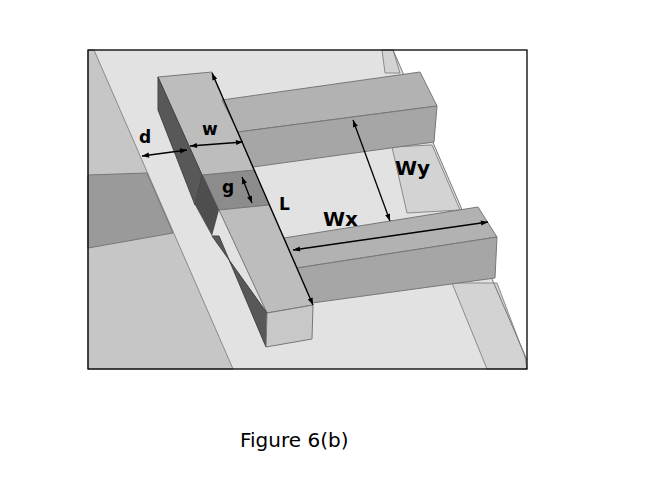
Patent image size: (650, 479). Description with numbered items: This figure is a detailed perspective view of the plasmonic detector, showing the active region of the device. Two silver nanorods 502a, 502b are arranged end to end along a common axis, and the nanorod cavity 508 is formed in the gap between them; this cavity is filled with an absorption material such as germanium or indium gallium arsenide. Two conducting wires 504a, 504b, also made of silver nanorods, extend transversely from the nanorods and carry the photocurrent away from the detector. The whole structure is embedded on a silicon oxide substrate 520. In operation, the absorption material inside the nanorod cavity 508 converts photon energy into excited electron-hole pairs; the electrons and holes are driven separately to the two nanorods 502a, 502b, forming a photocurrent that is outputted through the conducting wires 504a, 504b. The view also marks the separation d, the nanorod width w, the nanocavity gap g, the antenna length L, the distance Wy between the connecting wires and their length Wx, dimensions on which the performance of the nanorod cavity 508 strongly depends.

The Ag nanorod 502a is at (192, 83).
The Ag nanorod 502b is at (262, 287).
The conducting wire 504a is at (398, 82).
The conducting wire 504b is at (448, 270).
The nanorod cavity 508 is at (211, 207).
The SiO2 substrate 520 is at (397, 332).